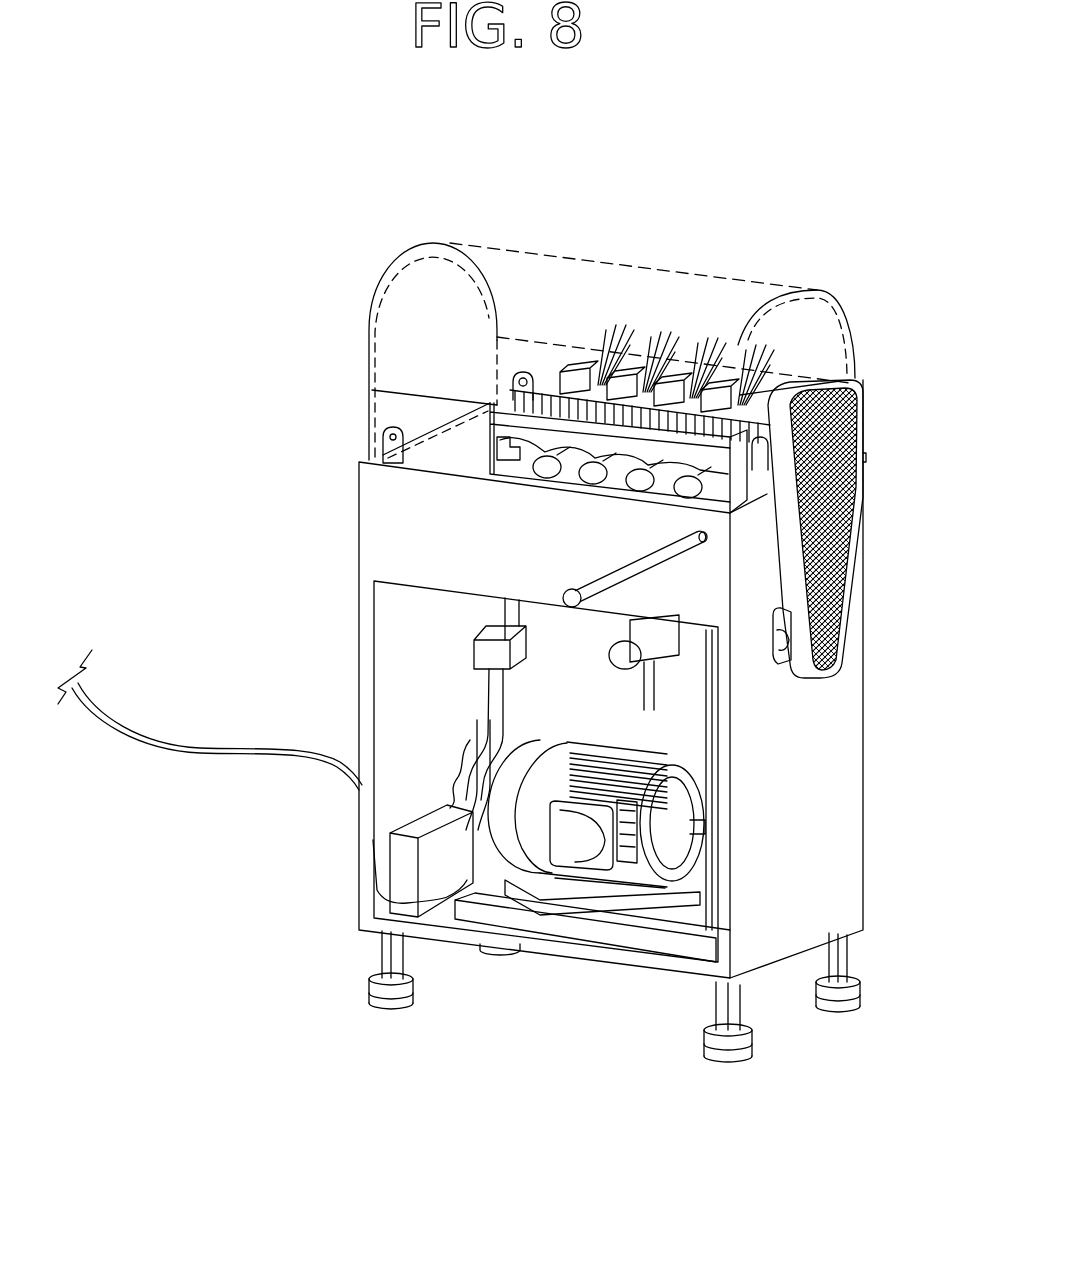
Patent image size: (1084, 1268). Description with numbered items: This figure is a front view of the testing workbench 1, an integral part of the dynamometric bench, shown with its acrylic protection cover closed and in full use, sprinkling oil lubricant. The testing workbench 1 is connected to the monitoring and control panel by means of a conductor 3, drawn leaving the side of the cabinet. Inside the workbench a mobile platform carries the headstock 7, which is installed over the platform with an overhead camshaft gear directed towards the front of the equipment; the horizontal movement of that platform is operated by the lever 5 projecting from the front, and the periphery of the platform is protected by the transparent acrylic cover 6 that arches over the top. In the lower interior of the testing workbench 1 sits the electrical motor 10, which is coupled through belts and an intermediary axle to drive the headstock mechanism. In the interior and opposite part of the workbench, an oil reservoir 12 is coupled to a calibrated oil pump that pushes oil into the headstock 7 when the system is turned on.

The testing workbench 1 is at (768, 768).
The conductor 3 is at (206, 742).
The lever 5 is at (567, 598).
The transparent acrylic cover 6 is at (765, 338).
The headstock 7 is at (497, 438).
The electrical motor 10 is at (632, 896).
The oil reservoir 12 is at (405, 862).